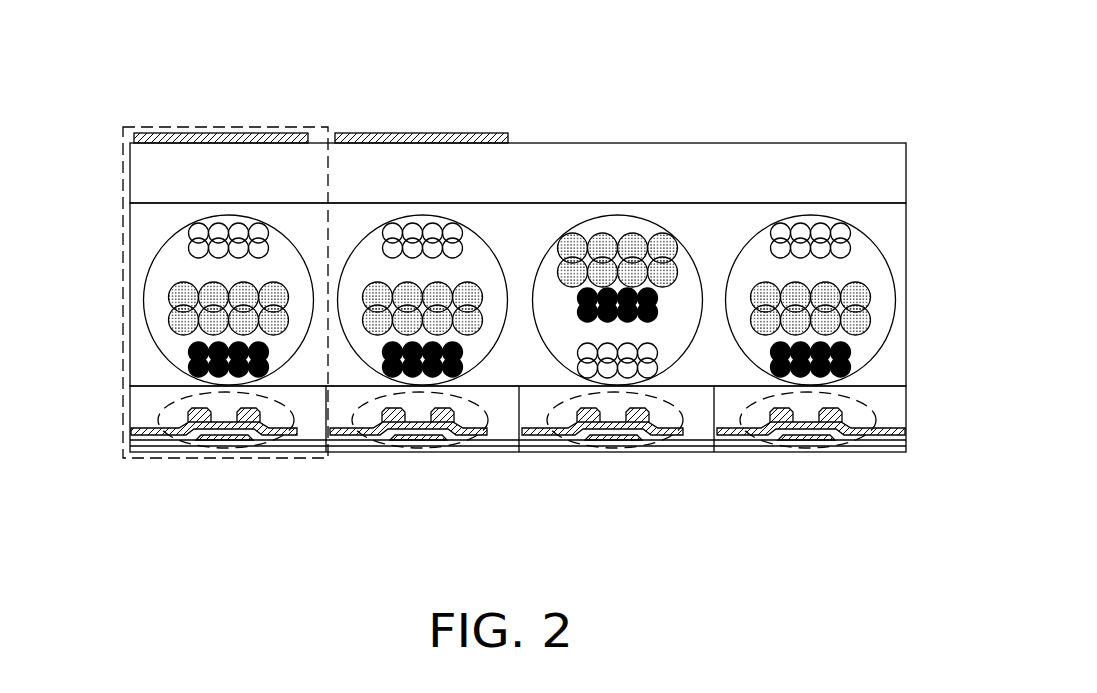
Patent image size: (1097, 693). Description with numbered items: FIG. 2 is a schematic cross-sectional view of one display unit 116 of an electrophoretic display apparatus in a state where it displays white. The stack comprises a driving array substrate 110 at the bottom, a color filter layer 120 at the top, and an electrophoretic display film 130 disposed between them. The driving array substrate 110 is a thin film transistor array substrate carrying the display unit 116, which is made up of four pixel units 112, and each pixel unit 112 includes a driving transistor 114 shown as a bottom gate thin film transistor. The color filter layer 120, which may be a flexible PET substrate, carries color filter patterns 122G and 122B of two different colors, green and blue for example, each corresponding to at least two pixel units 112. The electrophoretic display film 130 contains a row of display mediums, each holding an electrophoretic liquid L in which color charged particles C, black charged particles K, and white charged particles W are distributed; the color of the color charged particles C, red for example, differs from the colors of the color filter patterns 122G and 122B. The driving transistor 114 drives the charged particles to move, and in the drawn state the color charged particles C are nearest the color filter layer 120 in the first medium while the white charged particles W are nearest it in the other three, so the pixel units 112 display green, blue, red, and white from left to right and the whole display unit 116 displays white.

The display unit 116 is at (150, 78).
The pixel unit 112 is at (148, 125).
The color filter layer 120 is at (130, 176).
The color filter pattern 122G is at (207, 133).
The color filter pattern 122B is at (432, 133).
The electrophoretic display film 130 is at (129, 292).
The driving array substrate 110 is at (130, 424).
The driving transistor 114 is at (309, 432).
The white charged particles W is at (857, 230).
The color charged particles C is at (851, 306).
The black charged particles K is at (858, 359).
The electrophoretic liquid L is at (757, 343).